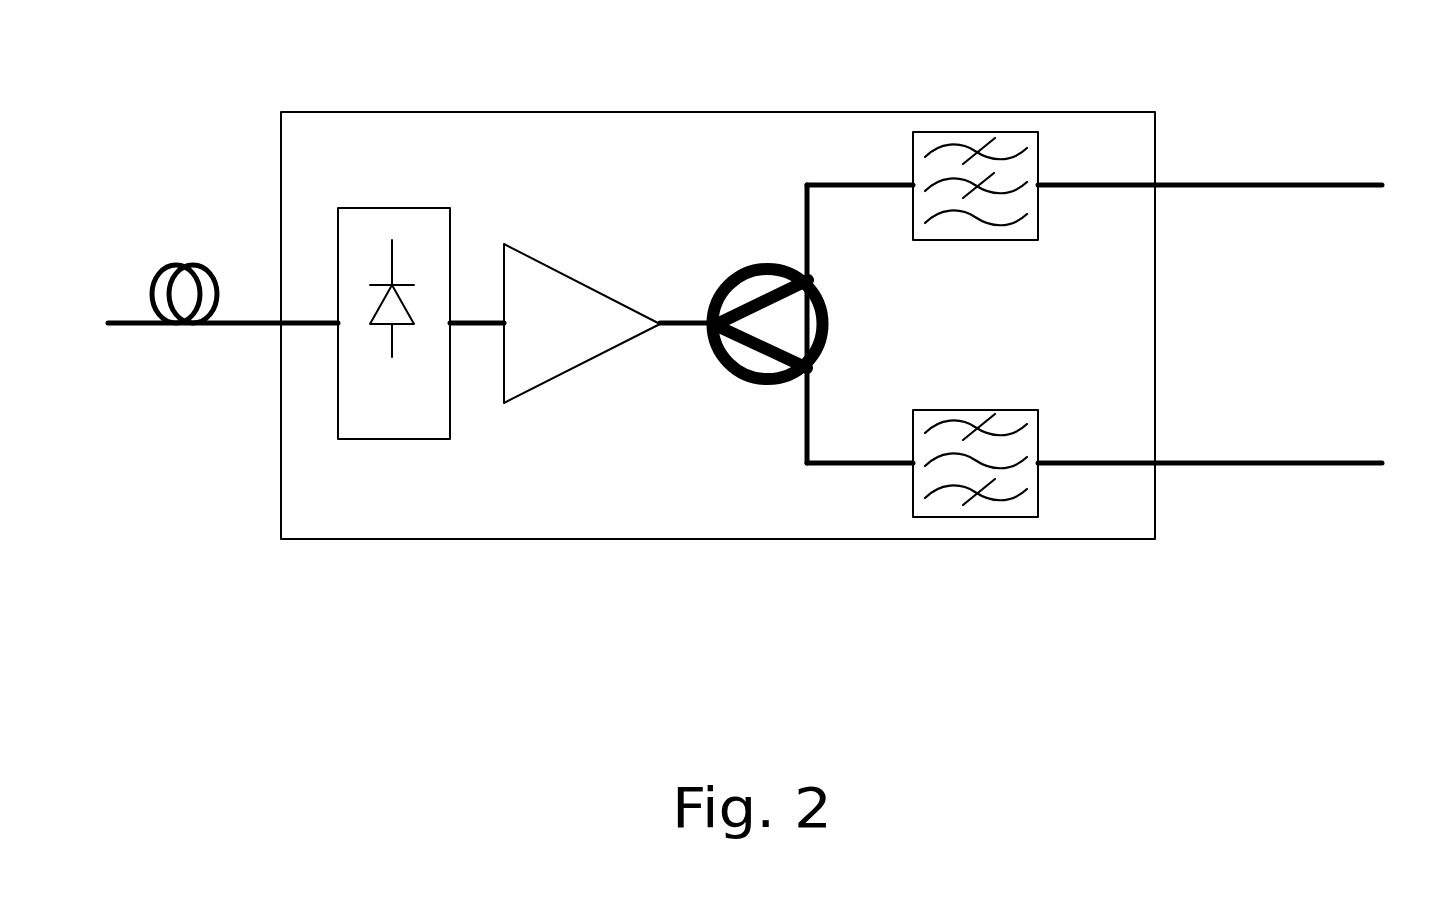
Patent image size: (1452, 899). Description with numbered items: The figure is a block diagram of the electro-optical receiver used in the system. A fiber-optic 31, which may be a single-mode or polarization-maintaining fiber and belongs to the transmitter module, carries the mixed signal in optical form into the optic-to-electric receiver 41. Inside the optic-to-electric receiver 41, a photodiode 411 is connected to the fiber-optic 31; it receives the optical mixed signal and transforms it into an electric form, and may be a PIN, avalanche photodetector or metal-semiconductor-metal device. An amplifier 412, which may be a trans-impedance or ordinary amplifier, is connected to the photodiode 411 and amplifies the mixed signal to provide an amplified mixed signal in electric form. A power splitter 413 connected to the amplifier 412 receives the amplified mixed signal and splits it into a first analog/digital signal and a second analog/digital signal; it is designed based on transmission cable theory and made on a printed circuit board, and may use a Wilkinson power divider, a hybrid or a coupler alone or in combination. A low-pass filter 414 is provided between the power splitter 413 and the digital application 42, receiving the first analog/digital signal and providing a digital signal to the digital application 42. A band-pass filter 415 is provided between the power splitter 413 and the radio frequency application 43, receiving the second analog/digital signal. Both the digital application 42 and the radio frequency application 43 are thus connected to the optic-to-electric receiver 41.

The fiber-optic 31 is at (172, 262).
The optic-to-electric receiver 41 is at (717, 112).
The photodiode 411 is at (392, 208).
The amplifier 412 is at (527, 278).
The power splitter 413 is at (768, 388).
The low-pass filter 414 is at (950, 132).
The band-pass filter 415 is at (955, 517).
The digital application 42 is at (1240, 185).
The radio frequency application 43 is at (1238, 463).